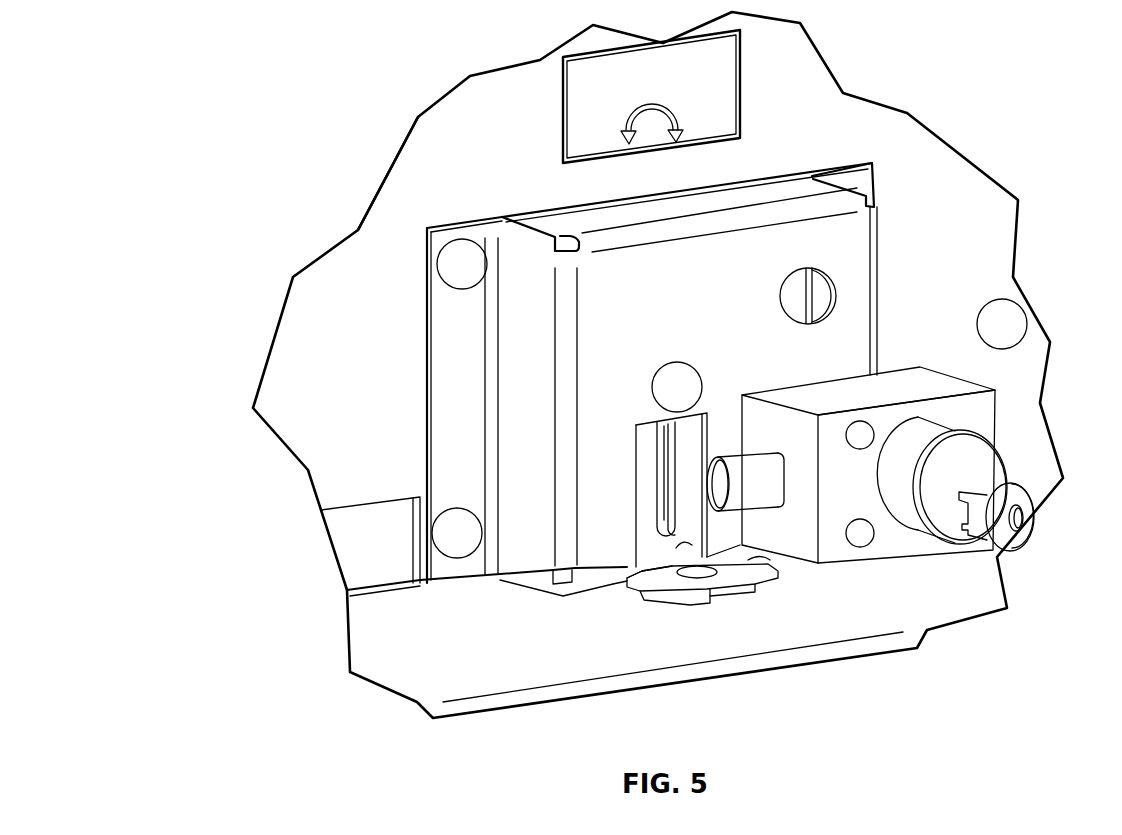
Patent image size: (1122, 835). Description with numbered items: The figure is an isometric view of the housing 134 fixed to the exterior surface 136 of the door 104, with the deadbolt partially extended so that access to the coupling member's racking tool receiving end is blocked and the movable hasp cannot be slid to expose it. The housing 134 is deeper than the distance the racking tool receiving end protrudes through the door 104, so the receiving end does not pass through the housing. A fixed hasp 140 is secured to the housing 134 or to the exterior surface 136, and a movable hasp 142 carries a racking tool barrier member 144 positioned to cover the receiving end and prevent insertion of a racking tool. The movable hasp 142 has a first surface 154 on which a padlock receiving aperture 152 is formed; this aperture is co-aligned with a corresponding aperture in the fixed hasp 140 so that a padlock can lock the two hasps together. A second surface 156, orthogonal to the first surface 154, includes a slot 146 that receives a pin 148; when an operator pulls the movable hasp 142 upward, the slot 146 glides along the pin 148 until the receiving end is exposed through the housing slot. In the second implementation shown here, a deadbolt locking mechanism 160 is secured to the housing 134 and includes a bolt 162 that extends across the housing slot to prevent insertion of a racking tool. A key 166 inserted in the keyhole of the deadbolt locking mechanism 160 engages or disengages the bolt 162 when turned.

The door 104 is at (802, 60).
The housing 134 is at (787, 190).
The exterior surface 136 is at (422, 149).
The fixed hasp 140 is at (742, 595).
The movable hasp 142 is at (648, 560).
The racking tool barrier member 144 is at (647, 487).
The slot 146 is at (648, 512).
The pin 148 is at (682, 377).
The padlock receiving aperture 152 is at (685, 548).
The first surface 154 is at (767, 558).
The second surface 156 is at (650, 450).
The deadbolt locking mechanism 160 is at (1020, 391).
The bolt 162 is at (767, 477).
The key 166 is at (1007, 542).